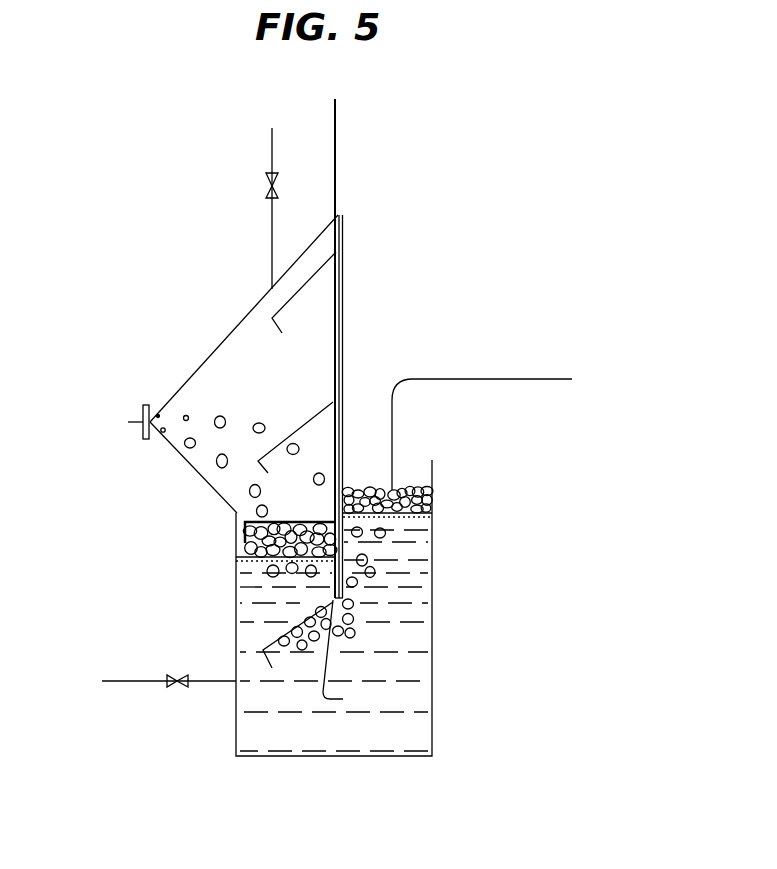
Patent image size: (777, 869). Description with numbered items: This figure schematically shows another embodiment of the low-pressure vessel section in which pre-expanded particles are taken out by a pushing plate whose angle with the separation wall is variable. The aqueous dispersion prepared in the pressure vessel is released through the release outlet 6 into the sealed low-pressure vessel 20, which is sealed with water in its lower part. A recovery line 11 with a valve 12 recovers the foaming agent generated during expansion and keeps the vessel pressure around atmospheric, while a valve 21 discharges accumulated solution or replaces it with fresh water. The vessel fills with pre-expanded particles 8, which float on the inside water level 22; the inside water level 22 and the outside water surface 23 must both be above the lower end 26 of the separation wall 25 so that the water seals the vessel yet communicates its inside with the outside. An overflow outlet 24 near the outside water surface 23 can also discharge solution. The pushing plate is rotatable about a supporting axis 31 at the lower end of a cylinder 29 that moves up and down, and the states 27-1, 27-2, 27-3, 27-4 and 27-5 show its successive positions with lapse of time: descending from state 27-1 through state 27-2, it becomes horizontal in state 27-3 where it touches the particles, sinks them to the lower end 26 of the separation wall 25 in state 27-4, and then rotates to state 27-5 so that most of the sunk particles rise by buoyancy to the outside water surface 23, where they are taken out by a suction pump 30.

The release outlet 6 is at (104, 422).
The pre-expanded particles 8 is at (243, 550).
The recovery line 11 is at (223, 208).
The valve 12 is at (226, 168).
The low-pressure vessel 20 is at (225, 366).
The valve 21 is at (169, 725).
The water level 22 is at (287, 608).
The water surface 23 is at (433, 550).
The overflow outlet 24 is at (432, 497).
The separation wall 25 is at (386, 406).
The lower end 26 is at (428, 629).
The state of pushing plate 27-1 is at (366, 292).
The state of pushing plate 27-2 is at (377, 437).
The state of pushing plate 27-3 is at (229, 525).
The state of pushing plate 27-4 is at (227, 635).
The state of pushing plate 27-5 is at (294, 722).
The cylinder 29 is at (386, 348).
The suction pump 30 is at (482, 391).
The supporting axis 31 is at (385, 406).